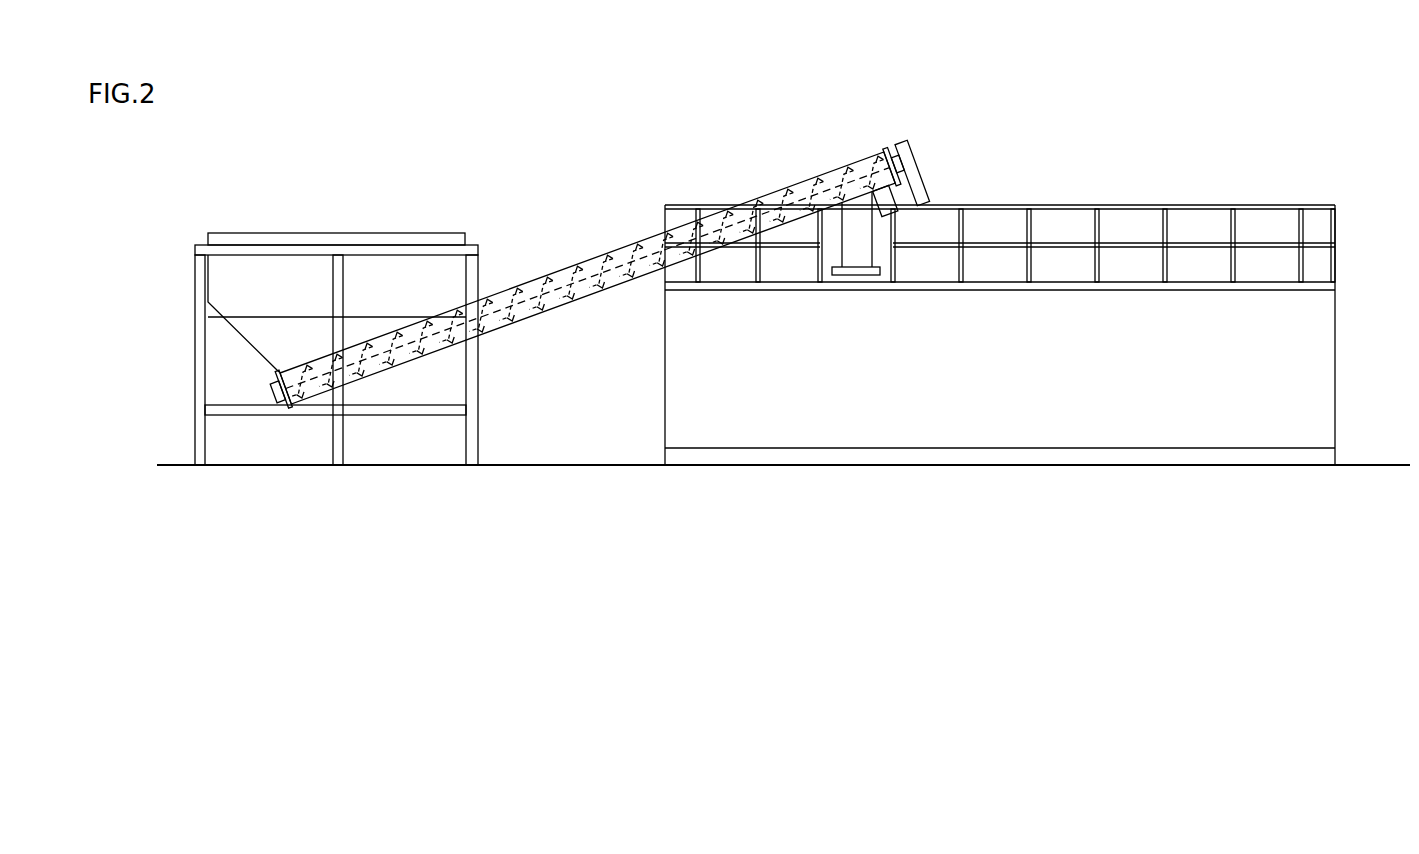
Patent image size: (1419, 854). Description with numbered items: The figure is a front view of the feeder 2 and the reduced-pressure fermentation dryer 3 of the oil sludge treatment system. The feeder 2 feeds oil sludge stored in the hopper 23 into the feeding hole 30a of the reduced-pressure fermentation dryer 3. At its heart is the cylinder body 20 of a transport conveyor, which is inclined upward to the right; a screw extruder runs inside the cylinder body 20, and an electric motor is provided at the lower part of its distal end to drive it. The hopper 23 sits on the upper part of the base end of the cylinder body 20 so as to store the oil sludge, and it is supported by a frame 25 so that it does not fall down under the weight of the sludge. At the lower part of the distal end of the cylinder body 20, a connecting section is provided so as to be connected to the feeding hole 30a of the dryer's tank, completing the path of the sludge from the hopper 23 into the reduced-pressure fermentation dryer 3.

The feeder 2 is at (366, 200).
The reduced-pressure fermentation dryer 3 is at (1020, 178).
The cylinder body 20 is at (578, 262).
The hopper 23 is at (236, 268).
The frame 25 is at (198, 317).
The feeding hole 30a is at (863, 277).